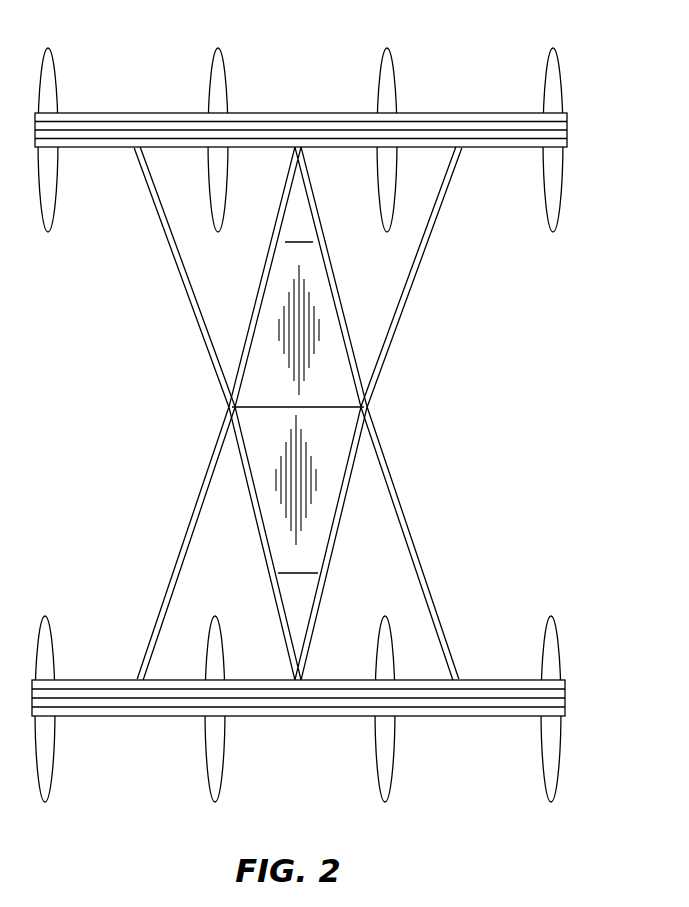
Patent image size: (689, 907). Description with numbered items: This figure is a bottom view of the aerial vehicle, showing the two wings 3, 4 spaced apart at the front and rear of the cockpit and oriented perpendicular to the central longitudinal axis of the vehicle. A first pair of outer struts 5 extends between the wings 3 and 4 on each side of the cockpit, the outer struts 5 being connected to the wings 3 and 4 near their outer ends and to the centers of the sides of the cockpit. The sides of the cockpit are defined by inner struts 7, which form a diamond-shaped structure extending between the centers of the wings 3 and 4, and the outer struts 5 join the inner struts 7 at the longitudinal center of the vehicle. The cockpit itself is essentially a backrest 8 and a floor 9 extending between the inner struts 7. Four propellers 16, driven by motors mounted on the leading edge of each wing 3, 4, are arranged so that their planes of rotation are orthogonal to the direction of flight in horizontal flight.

The wing 3 is at (567, 125).
The wing 4 is at (565, 693).
The outer struts 5 is at (162, 228).
The inner struts 7 is at (258, 296).
The backrest 8 is at (334, 441).
The floor 9 is at (263, 378).
The propellers 16 is at (50, 73).